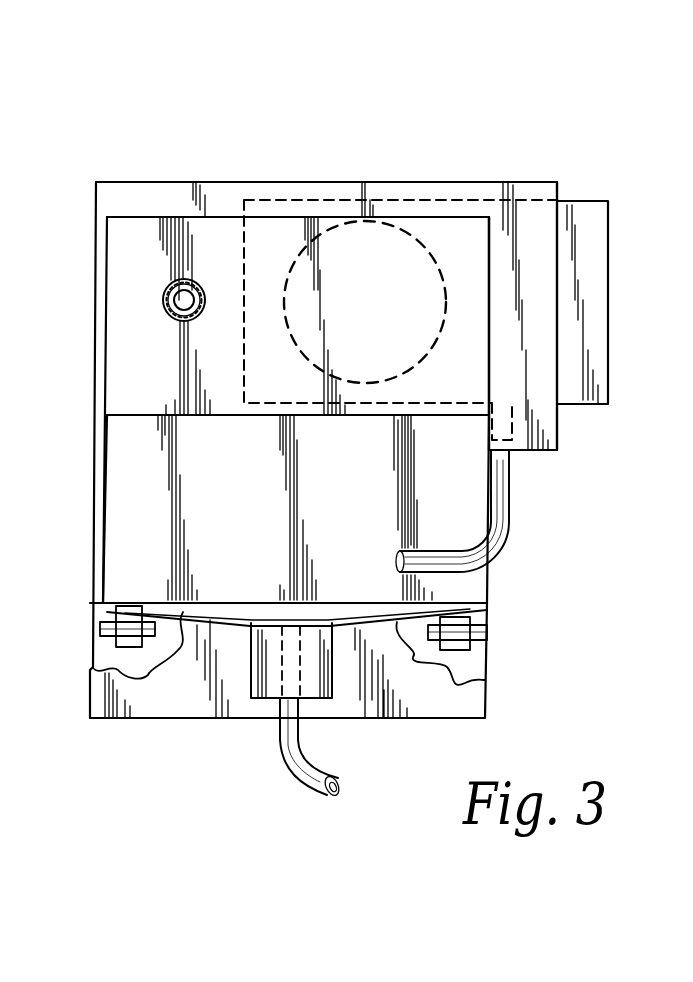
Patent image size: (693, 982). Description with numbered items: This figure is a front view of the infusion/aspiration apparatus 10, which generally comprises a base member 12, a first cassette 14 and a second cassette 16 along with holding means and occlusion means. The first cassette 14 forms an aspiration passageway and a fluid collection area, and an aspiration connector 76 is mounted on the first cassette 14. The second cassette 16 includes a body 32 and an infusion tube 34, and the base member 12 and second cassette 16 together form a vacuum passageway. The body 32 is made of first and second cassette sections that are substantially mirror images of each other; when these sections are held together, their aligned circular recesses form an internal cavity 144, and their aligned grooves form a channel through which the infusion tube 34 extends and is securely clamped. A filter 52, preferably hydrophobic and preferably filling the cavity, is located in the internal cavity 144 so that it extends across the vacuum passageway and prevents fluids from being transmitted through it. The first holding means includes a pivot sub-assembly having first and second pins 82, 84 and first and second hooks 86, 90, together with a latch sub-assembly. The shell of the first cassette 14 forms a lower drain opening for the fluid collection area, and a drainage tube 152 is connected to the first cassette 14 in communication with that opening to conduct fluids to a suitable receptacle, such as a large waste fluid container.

The infusion/aspiration apparatus 10 is at (316, 100).
The base member 12 is at (125, 188).
The first cassette 14 is at (118, 509).
The second cassette 16 is at (595, 176).
The body 32 is at (614, 333).
The infusion tube 34 is at (510, 489).
The filter 52 is at (412, 346).
The aspiration connector 76 is at (167, 304).
The first pin 82 is at (490, 605).
The second pin 84 is at (112, 644).
The first hook 86 is at (489, 642).
The second hook 90 is at (100, 628).
The internal cavity 144 is at (447, 271).
The drainage tube 152 is at (284, 765).